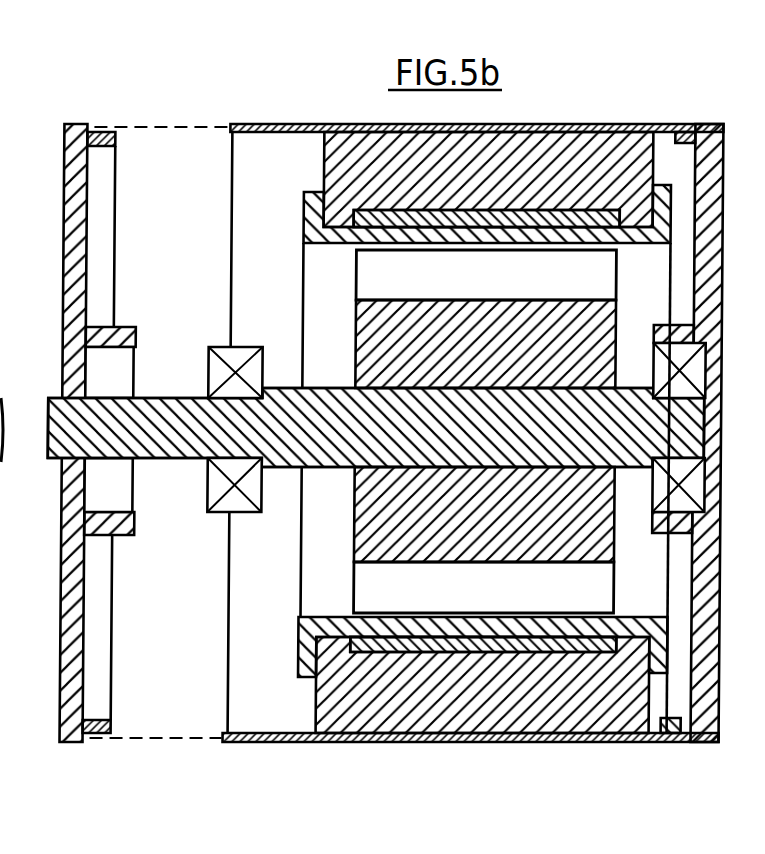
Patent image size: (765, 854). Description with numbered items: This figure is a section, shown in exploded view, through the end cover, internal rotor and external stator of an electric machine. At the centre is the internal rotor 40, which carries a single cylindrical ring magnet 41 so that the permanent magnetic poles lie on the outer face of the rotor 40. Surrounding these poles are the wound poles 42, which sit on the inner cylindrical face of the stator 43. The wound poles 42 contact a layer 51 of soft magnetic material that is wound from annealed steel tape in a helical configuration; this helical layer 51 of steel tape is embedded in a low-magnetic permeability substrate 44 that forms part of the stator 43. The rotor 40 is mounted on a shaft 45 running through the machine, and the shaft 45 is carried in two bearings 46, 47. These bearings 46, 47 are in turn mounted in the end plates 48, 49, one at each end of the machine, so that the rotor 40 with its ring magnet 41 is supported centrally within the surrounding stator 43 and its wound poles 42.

The internal rotor 40 is at (372, 492).
The cylindrical ring magnet 41 is at (372, 588).
The wound poles 42 is at (304, 222).
The stator 43 is at (616, 115).
The low-magnetic permeability substrate 44 is at (523, 157).
The shaft 45 is at (305, 402).
The bearing 46 is at (212, 513).
The bearing 47 is at (652, 500).
The end plate 48 is at (65, 533).
The end plate 49 is at (697, 672).
The layer of soft magnetic material 51 is at (408, 657).